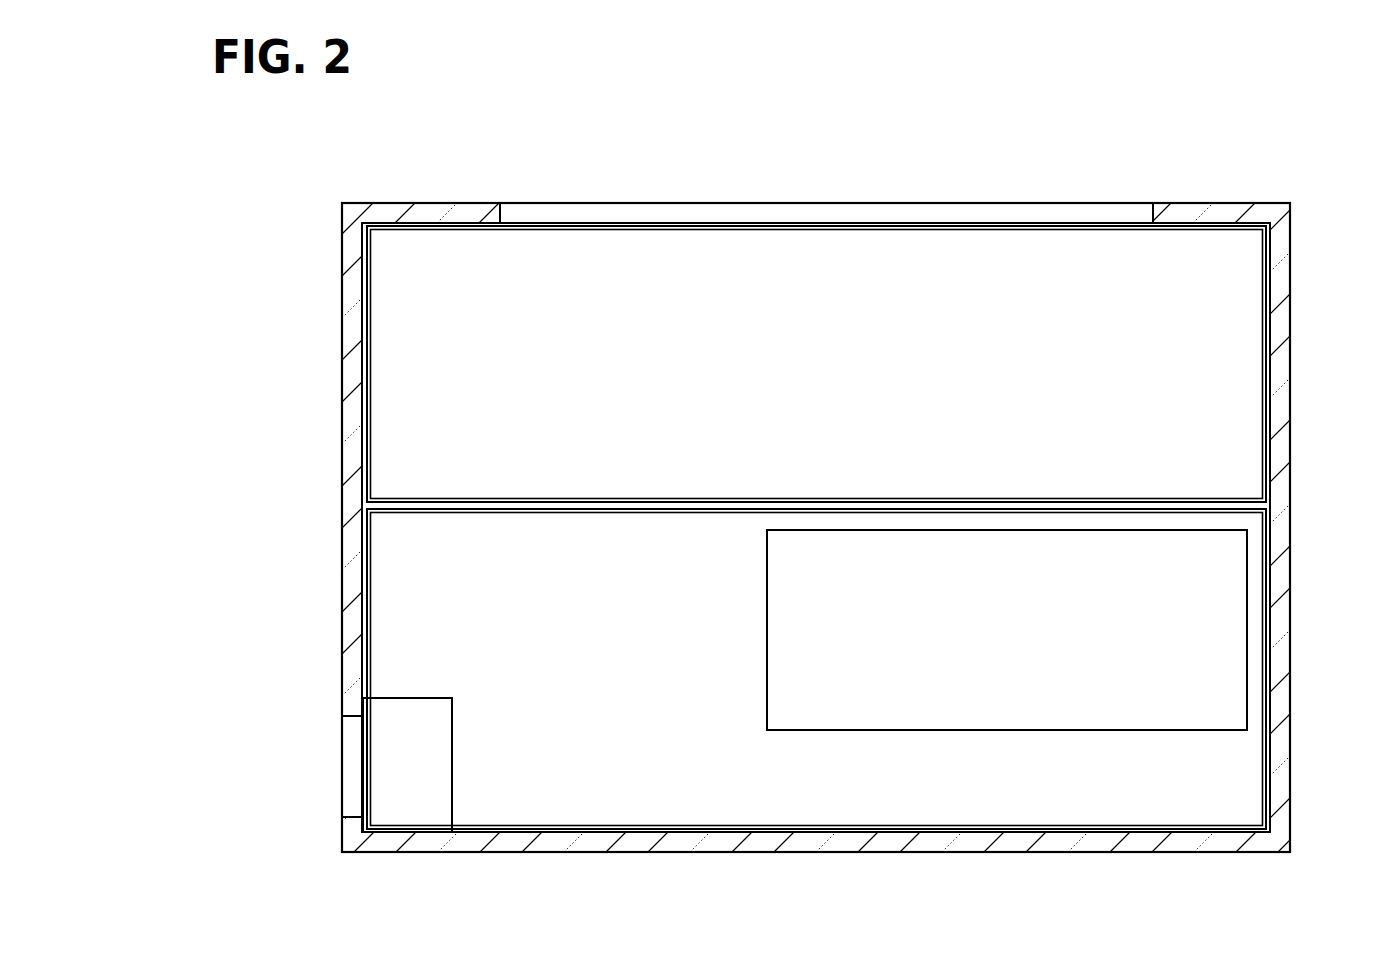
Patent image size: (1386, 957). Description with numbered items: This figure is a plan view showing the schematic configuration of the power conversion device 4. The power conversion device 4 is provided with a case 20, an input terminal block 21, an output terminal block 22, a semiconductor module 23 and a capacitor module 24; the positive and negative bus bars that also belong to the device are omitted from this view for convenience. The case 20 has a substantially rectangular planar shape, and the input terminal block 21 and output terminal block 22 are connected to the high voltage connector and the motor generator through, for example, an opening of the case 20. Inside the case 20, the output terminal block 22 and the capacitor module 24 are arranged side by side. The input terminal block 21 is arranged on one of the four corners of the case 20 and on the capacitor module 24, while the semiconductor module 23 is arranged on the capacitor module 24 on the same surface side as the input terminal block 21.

The power conversion device 4 is at (1301, 188).
The case 20 is at (1291, 286).
The input terminal block 21 is at (402, 808).
The output terminal block 22 is at (1205, 377).
The semiconductor module 23 is at (1205, 621).
The capacitor module 24 is at (1205, 765).